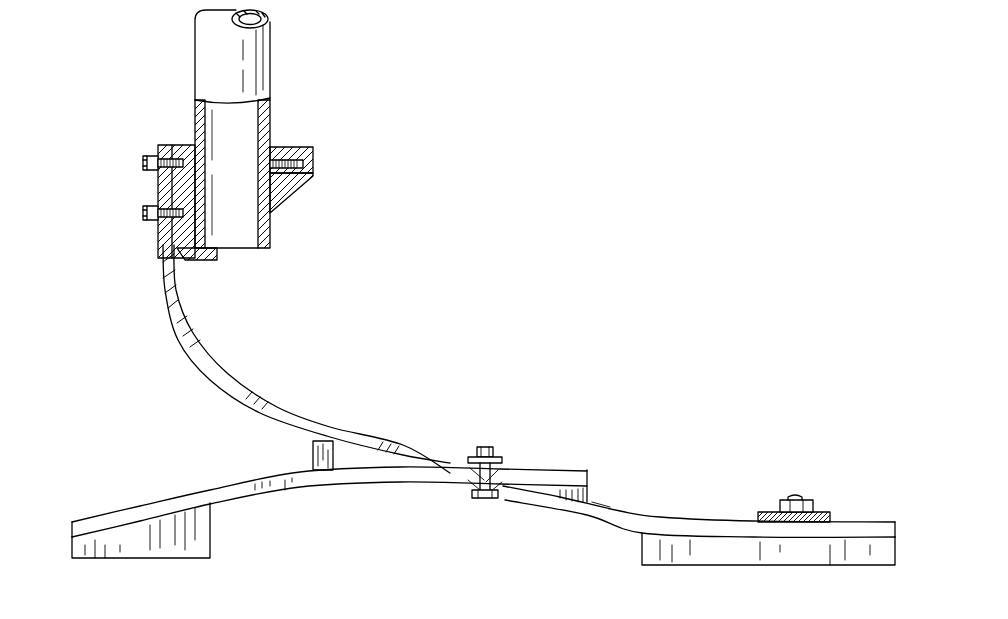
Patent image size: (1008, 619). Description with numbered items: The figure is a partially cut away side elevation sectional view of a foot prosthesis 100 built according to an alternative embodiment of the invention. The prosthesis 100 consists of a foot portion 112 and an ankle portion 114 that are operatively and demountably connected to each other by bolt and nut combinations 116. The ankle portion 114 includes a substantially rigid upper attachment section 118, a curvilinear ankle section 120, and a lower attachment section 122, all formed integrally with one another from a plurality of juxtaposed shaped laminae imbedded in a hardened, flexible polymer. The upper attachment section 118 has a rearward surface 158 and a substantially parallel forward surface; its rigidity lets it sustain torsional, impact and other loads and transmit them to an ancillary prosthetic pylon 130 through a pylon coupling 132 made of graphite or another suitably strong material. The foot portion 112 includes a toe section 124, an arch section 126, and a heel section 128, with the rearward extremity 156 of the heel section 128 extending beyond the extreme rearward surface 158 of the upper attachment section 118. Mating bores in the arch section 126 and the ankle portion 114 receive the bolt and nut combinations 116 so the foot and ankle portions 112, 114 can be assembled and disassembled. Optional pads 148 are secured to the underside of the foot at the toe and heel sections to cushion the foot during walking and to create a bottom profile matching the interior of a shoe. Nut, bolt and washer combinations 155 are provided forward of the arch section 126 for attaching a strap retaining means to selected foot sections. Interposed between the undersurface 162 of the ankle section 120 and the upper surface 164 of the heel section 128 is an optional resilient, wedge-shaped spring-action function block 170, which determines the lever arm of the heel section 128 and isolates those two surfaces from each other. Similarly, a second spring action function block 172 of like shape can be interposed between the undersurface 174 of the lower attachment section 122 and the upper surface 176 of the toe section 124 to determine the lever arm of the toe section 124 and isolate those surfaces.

The foot prosthesis 100 is at (563, 226).
The foot portion 112 is at (700, 512).
The ankle portion 114 is at (298, 359).
The bolt and nut combinations 116 is at (498, 459).
The upper attachment section 118 is at (158, 193).
The curvilinear ankle section 120 is at (182, 340).
The lower attachment section 122 is at (403, 452).
The toe section 124 is at (855, 519).
The arch section 126 is at (528, 500).
The heel section 128 is at (336, 465).
The prosthetic pylon 130 is at (272, 72).
The pylon coupling 132 is at (303, 197).
The pads 148 is at (142, 552).
The nut, bolt and washer combinations 155 is at (810, 498).
The rearward extremity 156 is at (72, 522).
The rearward surface 158 is at (158, 186).
The undersurface of the ankle section 162 is at (270, 423).
The upper surface of the heel section 164 is at (282, 476).
The spring-action function block 170 is at (340, 464).
The second spring action function block 172 is at (583, 468).
The undersurface of the lower attachment section 174 is at (547, 478).
The upper surface of the toe section 176 is at (592, 508).